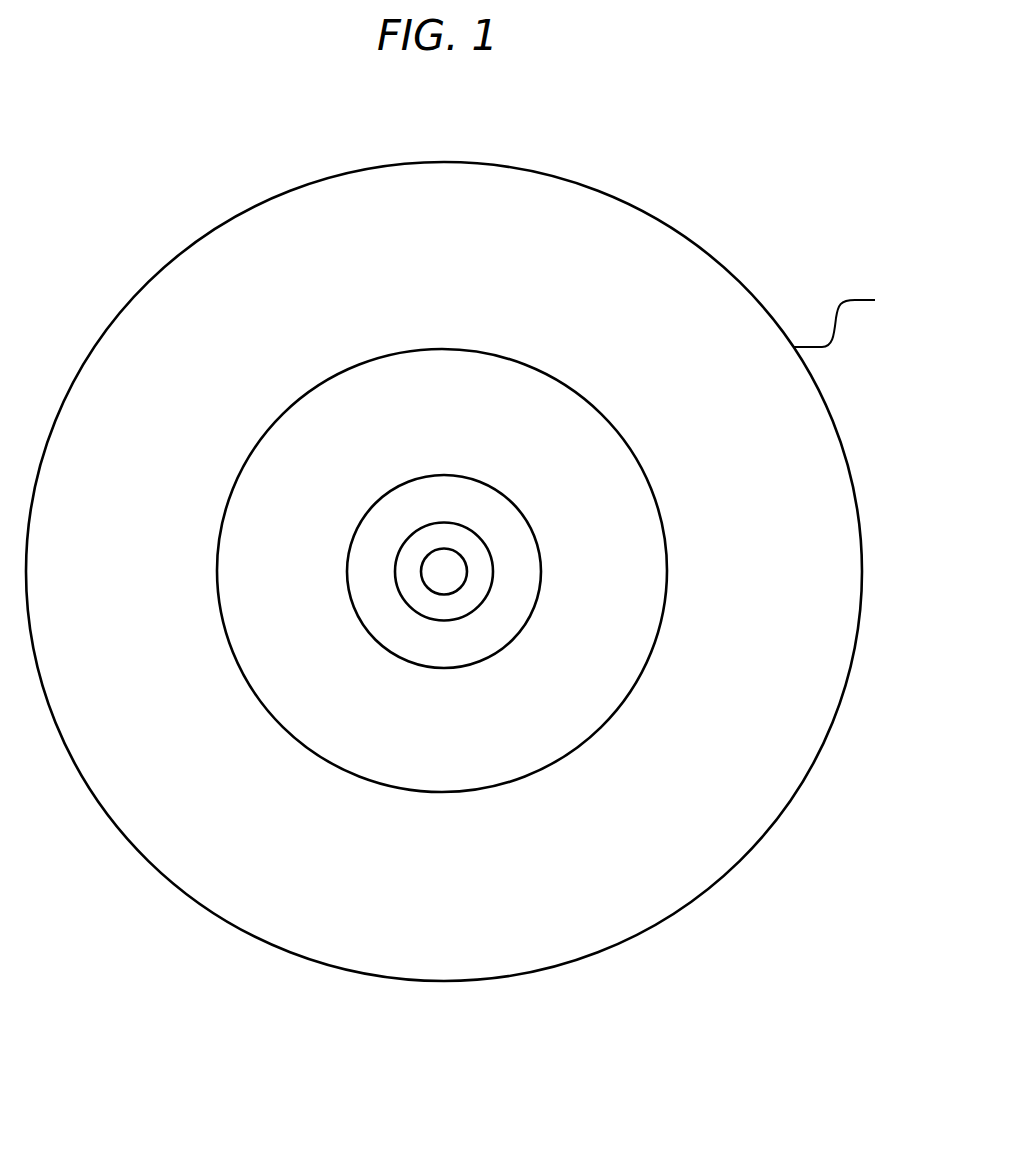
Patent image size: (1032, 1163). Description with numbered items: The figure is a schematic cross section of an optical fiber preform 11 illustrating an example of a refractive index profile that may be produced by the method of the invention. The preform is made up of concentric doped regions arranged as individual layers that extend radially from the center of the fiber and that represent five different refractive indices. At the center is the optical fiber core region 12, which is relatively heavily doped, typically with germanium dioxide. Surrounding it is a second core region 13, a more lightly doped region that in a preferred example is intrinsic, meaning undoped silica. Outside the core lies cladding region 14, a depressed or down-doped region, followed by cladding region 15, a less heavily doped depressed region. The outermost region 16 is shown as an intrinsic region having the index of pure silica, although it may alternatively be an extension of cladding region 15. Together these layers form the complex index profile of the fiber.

The optical fiber preform 11 is at (725, 226).
The optical fiber core region 12 is at (467, 567).
The second core region 13 is at (395, 572).
The cladding region 14 is at (475, 652).
The cladding region 15 is at (592, 670).
The region 16 is at (853, 315).